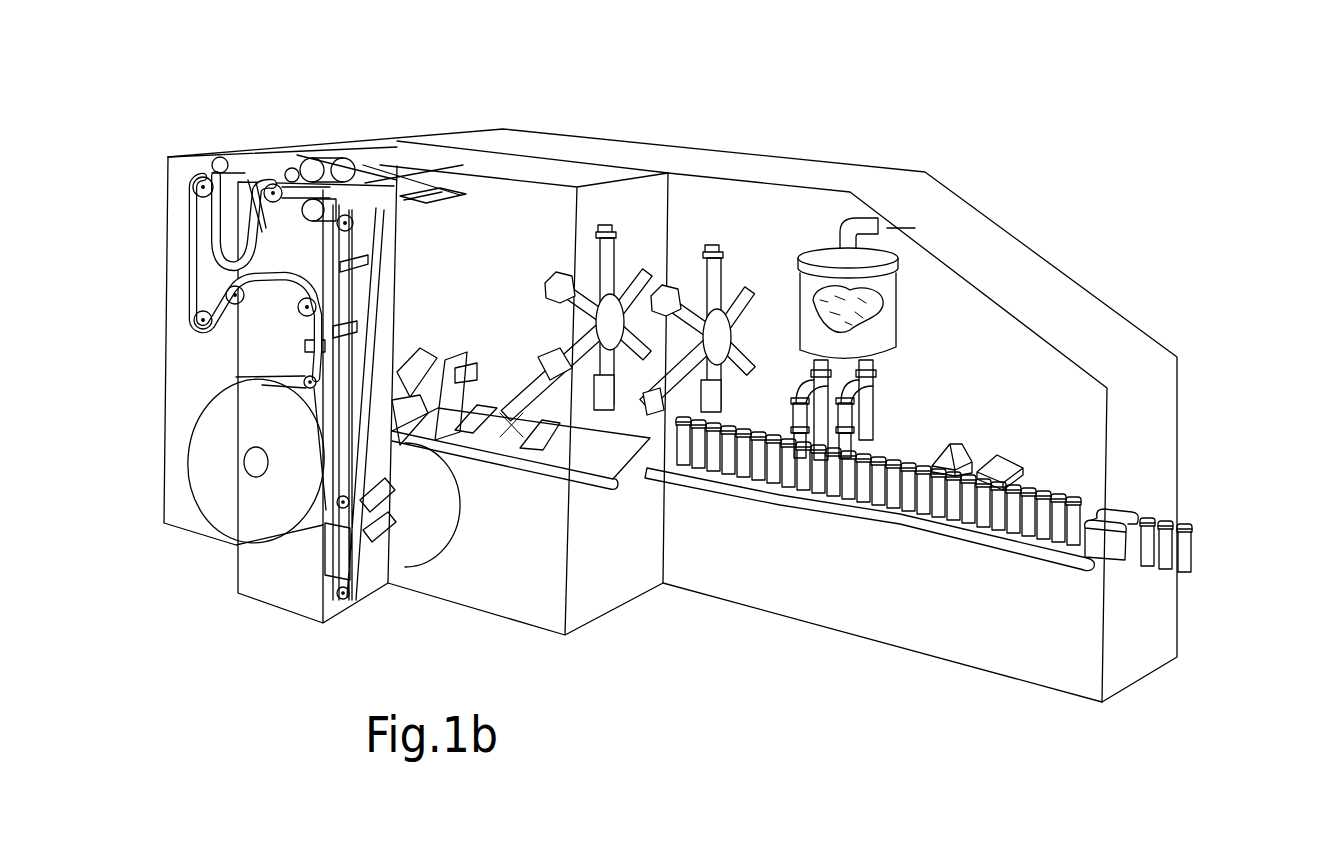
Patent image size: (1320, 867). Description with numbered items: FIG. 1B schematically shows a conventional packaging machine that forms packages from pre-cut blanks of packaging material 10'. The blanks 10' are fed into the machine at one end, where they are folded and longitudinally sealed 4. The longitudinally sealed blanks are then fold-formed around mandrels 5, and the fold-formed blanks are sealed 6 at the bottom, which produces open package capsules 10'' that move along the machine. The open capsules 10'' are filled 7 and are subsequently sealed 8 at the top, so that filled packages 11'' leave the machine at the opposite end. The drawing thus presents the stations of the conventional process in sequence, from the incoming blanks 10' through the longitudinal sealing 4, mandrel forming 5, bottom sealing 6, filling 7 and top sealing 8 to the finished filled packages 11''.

The longitudinal sealing station 4 is at (440, 483).
The mandrels 5 is at (573, 357).
The bottom sealing station 6 is at (708, 238).
The filling station 7 is at (893, 383).
The top sealing station 8 is at (1015, 467).
The pre-cut blanks of packaging material 10' is at (466, 121).
The open package capsules 10'' is at (869, 594).
The filled packages 11'' is at (1195, 500).